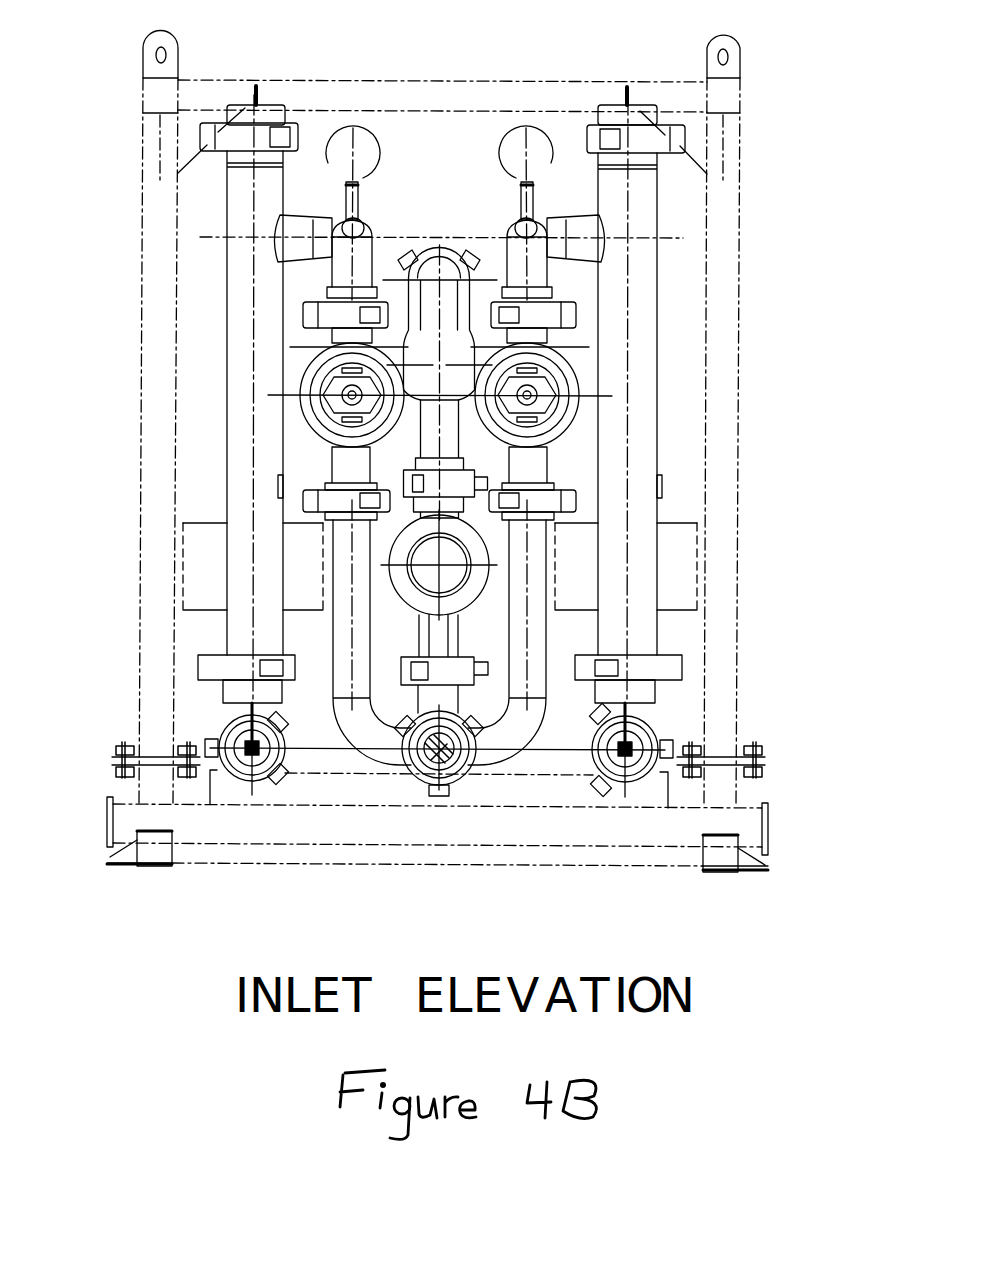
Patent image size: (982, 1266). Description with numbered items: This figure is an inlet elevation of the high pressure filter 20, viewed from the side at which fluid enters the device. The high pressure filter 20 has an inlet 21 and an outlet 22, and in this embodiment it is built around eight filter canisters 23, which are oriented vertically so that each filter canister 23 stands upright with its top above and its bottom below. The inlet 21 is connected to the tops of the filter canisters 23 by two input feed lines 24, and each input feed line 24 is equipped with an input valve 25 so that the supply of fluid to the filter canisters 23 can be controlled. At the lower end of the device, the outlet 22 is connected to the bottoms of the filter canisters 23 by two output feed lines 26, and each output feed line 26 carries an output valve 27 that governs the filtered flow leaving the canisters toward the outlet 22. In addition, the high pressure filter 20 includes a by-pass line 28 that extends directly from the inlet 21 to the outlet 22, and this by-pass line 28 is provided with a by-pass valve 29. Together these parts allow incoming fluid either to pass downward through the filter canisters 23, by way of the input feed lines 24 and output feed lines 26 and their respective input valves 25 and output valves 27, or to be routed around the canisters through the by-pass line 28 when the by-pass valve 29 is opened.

The high pressure filter 20 is at (756, 191).
The inlet 21 is at (450, 757).
The outlet 22 is at (450, 237).
The filter canister 23 is at (232, 440).
The input feed line 24 is at (368, 238).
The input valve 25 is at (303, 387).
The output feed line 26 is at (222, 728).
The output valve 27 is at (678, 545).
The by-pass line 28 is at (428, 630).
The by-pass valve 29 is at (393, 587).